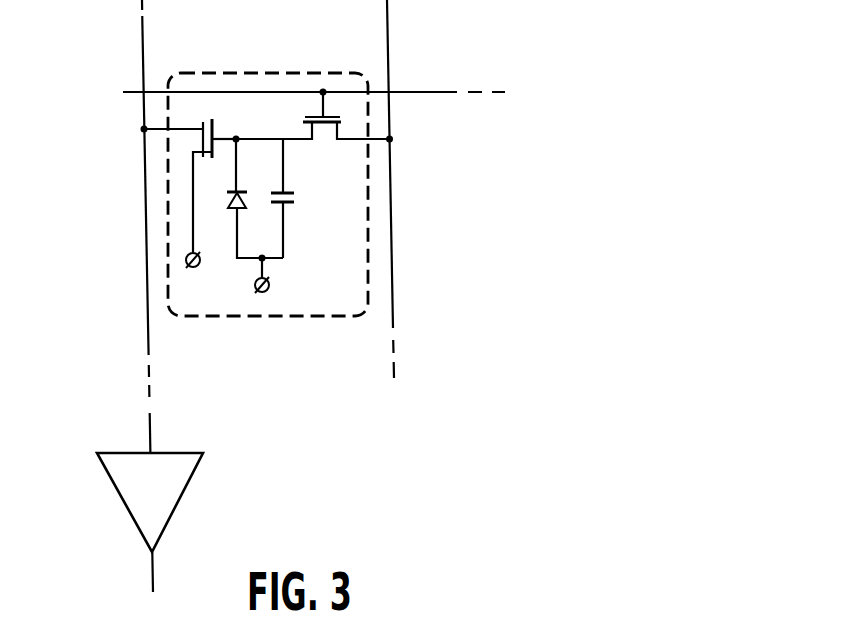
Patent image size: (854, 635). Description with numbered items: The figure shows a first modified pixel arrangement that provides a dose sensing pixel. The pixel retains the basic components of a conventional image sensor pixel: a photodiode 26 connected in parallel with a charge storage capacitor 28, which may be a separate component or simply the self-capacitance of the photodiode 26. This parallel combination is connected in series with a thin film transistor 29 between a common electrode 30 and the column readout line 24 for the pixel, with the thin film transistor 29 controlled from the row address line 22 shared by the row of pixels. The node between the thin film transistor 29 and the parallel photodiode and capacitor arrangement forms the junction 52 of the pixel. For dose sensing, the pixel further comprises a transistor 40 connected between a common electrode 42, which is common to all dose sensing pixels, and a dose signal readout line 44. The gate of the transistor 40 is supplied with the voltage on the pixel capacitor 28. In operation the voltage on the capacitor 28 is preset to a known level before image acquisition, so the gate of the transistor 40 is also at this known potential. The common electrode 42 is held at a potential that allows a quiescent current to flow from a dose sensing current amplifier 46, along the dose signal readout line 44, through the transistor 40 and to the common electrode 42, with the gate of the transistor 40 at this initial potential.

The row address line 22 is at (418, 90).
The column readout line 24 is at (393, 311).
The photodiode 26 is at (242, 208).
The charge storage capacitor 28 is at (296, 194).
The thin film transistor 29 is at (345, 121).
The common electrode 30 is at (270, 287).
The dose sensing transistor 40 is at (203, 140).
The common electrode 42 is at (186, 259).
The dose signal readout line 44 is at (148, 337).
The dose sensing current amplifier 46 is at (132, 497).
The junction 52 is at (278, 100).